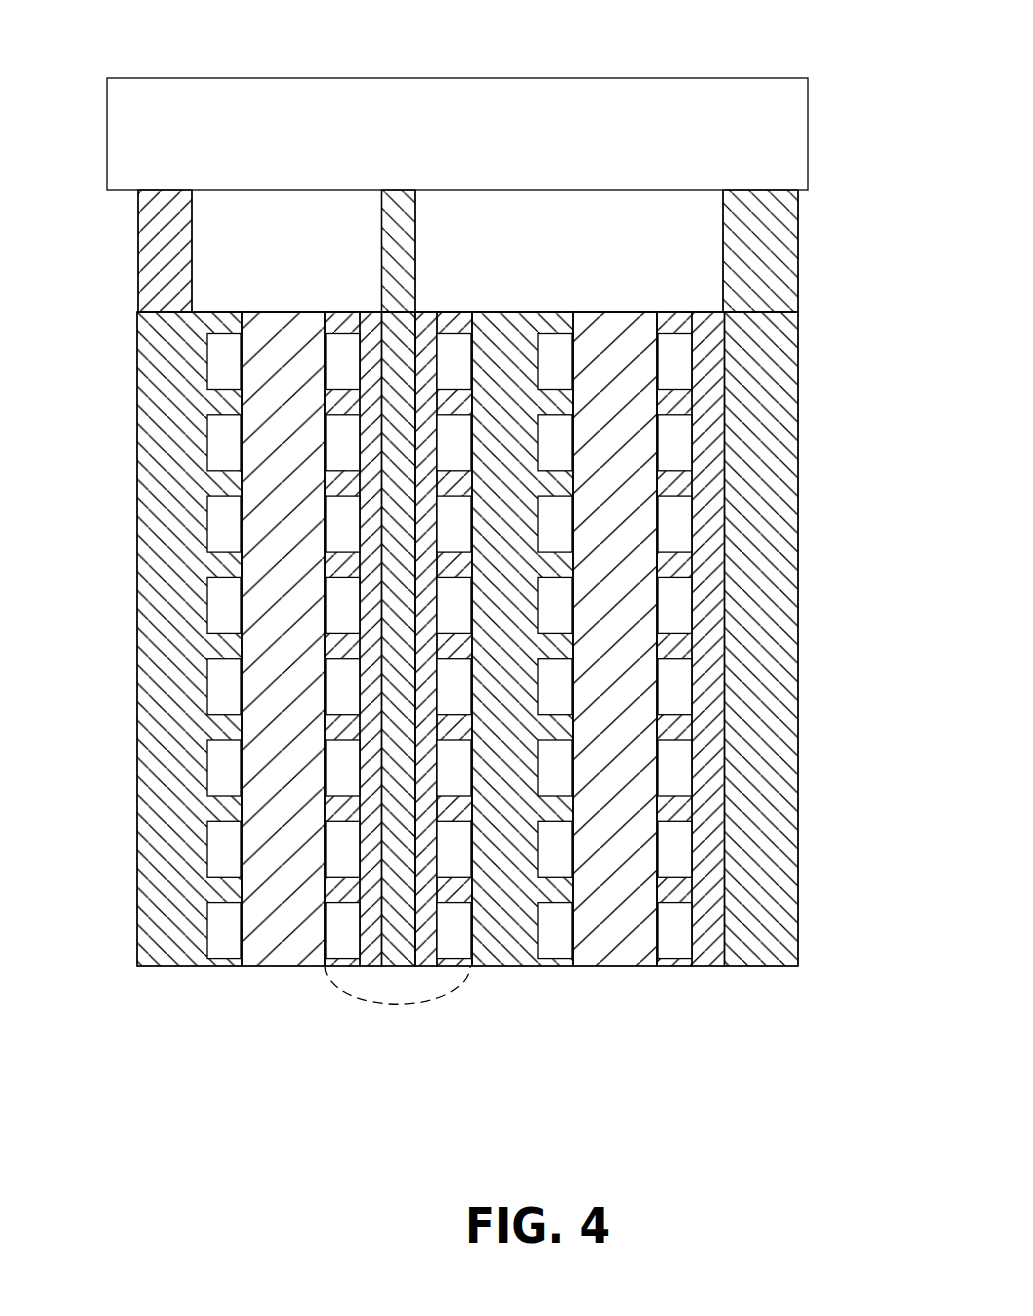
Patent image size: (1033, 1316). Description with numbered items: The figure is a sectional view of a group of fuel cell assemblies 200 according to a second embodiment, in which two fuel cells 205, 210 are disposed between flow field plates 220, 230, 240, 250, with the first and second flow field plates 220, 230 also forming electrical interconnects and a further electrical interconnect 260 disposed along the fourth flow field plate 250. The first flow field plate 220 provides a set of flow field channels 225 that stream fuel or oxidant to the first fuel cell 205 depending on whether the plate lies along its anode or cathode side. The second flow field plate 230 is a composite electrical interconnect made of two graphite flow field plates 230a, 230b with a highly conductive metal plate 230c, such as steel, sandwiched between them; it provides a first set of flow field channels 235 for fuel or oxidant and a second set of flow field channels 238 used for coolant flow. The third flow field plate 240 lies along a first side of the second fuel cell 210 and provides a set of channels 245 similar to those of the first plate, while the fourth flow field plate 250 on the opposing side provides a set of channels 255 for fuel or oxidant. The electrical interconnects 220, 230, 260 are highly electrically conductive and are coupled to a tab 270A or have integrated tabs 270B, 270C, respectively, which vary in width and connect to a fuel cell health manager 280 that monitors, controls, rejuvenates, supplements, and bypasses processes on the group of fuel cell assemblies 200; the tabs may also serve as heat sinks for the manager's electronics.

The group of fuel cell assemblies 200 is at (822, 254).
The first fuel cell 205 is at (285, 942).
The second fuel cell 210 is at (617, 927).
The first flow field plate 220 is at (160, 920).
The flow field channels 225 is at (222, 445).
The second flow field plate 230 is at (345, 987).
The flow field plate 230a is at (372, 950).
The flow field plate 230b is at (425, 938).
The metal plate 230c is at (398, 952).
The first set of flow field channels 235 is at (343, 532).
The second set of flow field channels 238 is at (463, 930).
The third flow field plate 240 is at (510, 923).
The set of channels 245 is at (683, 610).
The fourth flow field plate 250 is at (703, 937).
The set of channels 255 is at (673, 937).
The electrical interconnect 260 is at (763, 942).
The tab 270A is at (138, 272).
The integrated tab 270B is at (400, 238).
The integrated tab 270C is at (740, 238).
The fuel cell health manager 280 is at (700, 95).